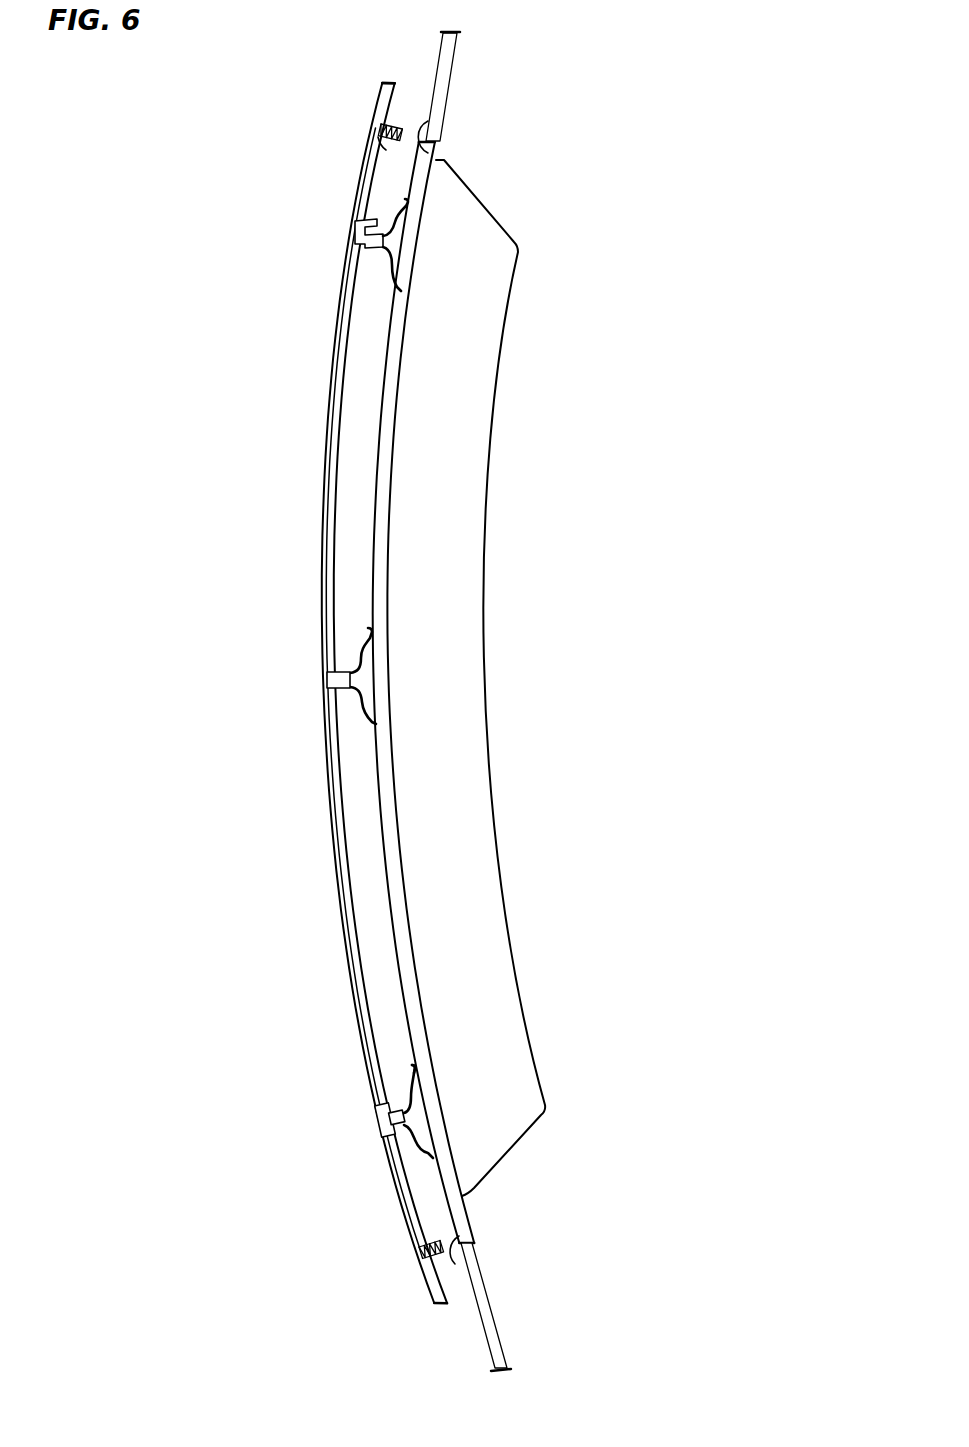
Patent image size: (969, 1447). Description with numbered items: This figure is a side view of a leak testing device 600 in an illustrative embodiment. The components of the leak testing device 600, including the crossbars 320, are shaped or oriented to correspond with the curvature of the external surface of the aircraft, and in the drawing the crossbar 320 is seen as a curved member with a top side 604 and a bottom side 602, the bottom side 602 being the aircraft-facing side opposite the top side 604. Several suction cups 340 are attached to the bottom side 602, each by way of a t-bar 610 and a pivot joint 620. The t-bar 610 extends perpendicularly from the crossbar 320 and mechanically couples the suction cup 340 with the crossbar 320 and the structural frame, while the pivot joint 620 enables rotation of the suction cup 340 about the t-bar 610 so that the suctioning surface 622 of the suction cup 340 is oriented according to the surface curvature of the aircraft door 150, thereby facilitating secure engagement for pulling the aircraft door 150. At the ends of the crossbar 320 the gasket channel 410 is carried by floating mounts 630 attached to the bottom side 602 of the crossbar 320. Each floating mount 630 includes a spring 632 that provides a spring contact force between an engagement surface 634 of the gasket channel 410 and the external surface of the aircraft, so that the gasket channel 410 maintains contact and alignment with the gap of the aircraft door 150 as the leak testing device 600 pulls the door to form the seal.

The leak testing device 600 is at (644, 122).
The aircraft door 150 is at (378, 860).
The gasket channel 410 is at (420, 98).
The engagement surface 634 is at (430, 130).
The spring 632 is at (403, 121).
The floating mount 630 is at (391, 143).
The top side 604 is at (329, 405).
The bottom side 602 is at (344, 418).
The crossbar 320 is at (310, 520).
The suction cup 340 is at (390, 276).
The t-bar 610 is at (342, 684).
The pivot joint 620 is at (384, 1122).
The suctioning surface 622 is at (427, 1094).